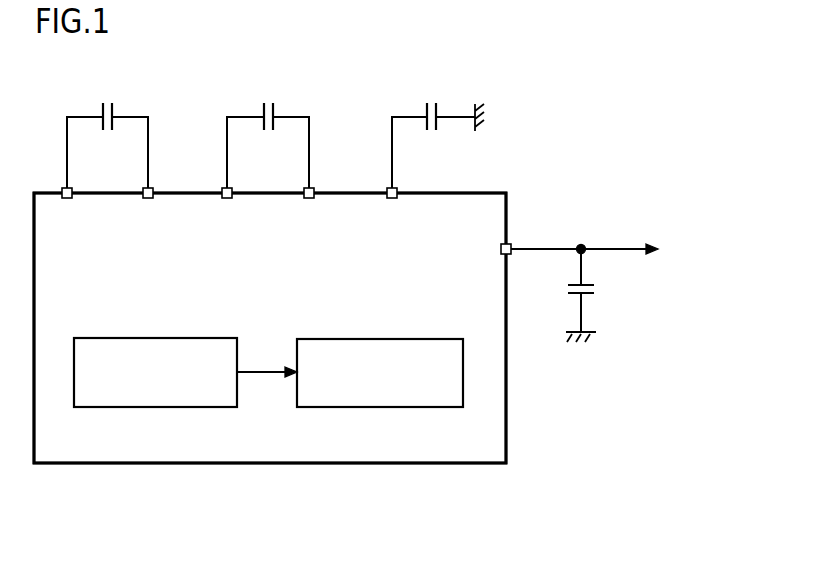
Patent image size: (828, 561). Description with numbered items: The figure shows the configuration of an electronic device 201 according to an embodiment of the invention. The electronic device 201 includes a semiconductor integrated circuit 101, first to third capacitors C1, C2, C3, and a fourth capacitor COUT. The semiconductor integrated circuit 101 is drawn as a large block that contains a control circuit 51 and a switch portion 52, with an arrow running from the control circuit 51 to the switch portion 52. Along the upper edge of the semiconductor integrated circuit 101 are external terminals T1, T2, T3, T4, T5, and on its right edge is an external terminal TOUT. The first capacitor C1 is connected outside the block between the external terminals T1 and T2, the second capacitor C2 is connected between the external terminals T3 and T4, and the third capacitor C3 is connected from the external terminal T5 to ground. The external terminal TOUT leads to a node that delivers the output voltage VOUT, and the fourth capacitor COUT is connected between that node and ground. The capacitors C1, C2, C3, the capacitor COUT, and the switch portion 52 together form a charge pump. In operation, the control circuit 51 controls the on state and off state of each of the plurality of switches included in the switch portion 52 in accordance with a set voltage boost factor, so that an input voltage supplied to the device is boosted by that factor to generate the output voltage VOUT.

The electronic device 201 is at (745, 74).
The semiconductor integrated circuit 101 is at (483, 192).
The control circuit 51 is at (185, 338).
The switch portion 52 is at (412, 339).
The external terminal T1 is at (62, 190).
The external terminal T2 is at (153, 190).
The external terminal T3 is at (222, 190).
The external terminal T4 is at (314, 190).
The external terminal T5 is at (387, 190).
The first capacitor C1 is at (113, 107).
The second capacitor C2 is at (273, 107).
The third capacitor C3 is at (437, 107).
The external terminal TOUT is at (511, 246).
The output voltage VOUT is at (621, 250).
The fourth capacitor COUT is at (590, 293).